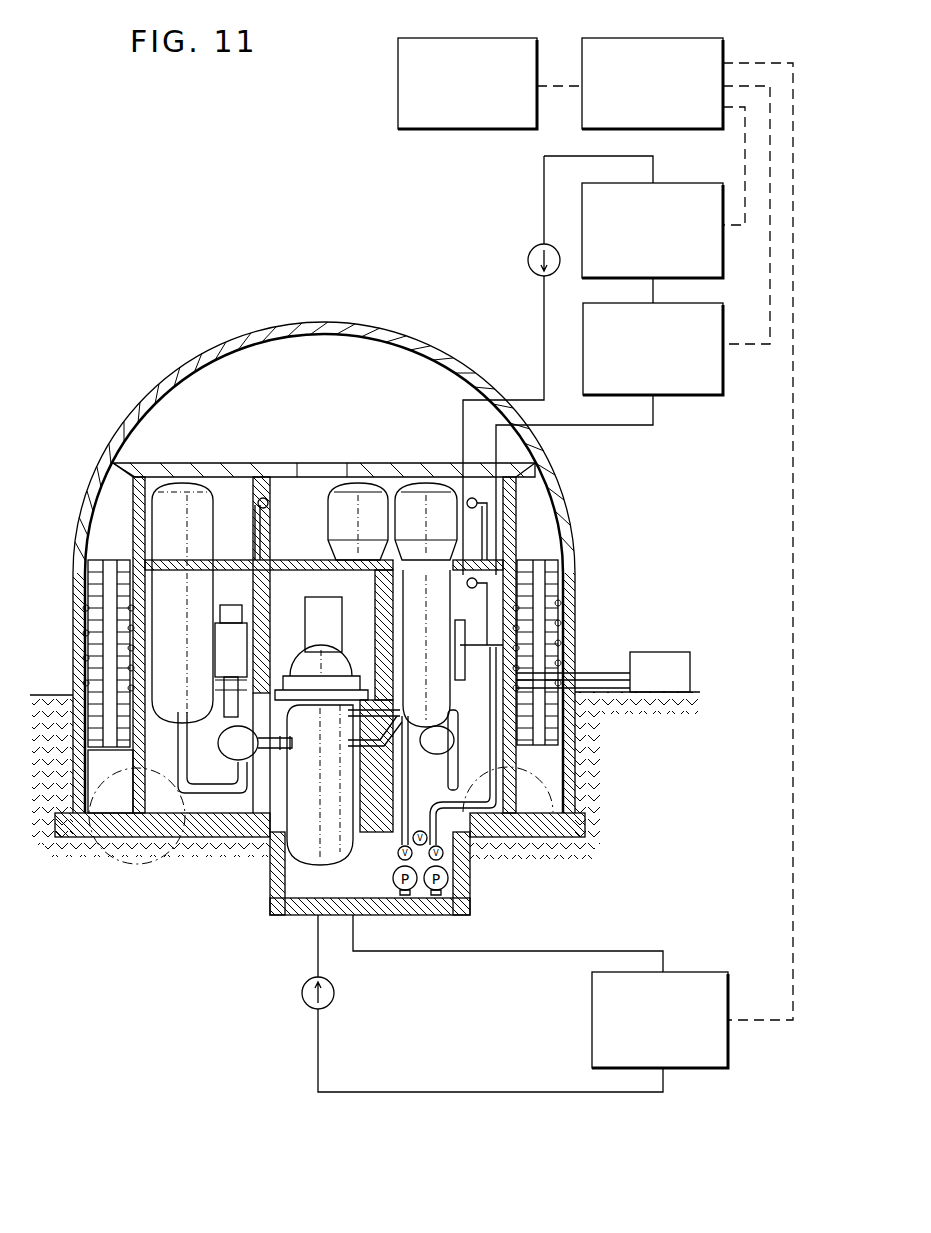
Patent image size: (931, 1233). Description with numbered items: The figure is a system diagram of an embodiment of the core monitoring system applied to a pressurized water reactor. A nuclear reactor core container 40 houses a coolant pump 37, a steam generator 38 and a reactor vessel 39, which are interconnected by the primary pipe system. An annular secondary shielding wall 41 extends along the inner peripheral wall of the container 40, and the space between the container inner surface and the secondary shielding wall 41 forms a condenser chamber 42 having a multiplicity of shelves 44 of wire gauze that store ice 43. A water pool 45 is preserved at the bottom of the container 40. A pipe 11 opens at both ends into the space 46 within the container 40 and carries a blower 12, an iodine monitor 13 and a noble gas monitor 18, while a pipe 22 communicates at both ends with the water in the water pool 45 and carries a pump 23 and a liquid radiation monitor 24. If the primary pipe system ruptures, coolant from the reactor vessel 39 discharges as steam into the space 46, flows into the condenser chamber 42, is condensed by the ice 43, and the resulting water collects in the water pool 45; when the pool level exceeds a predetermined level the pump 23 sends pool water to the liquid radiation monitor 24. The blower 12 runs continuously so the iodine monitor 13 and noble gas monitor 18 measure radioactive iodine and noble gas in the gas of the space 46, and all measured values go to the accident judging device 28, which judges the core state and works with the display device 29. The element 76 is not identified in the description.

The pipe 11 is at (612, 425).
The blower 12 is at (528, 262).
The iodine monitor 13 is at (723, 314).
The noble gas monitor 18 is at (692, 183).
The pipe 22 is at (352, 924).
The pump 23 is at (302, 993).
The liquid radiation monitor 24 is at (728, 996).
The accident judging device 28 is at (684, 38).
The display device 29 is at (472, 38).
The coolant pump 37 is at (255, 760).
The steam generator 38 is at (208, 490).
The reactor vessel 39 is at (332, 796).
The nuclear reactor core container 40 is at (128, 412).
The secondary shielding wall 41 is at (132, 550).
The condenser chamber 42 is at (546, 515).
The ice 43 is at (550, 587).
The shelves 44 is at (88, 607).
The water pool 45 is at (268, 905).
The space 46 is at (467, 600).
The penetration region 76 is at (155, 840).